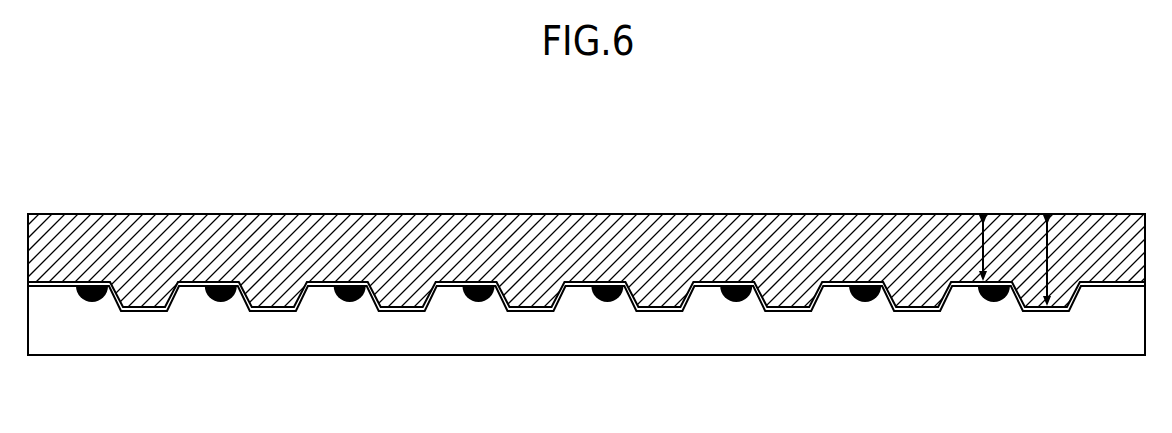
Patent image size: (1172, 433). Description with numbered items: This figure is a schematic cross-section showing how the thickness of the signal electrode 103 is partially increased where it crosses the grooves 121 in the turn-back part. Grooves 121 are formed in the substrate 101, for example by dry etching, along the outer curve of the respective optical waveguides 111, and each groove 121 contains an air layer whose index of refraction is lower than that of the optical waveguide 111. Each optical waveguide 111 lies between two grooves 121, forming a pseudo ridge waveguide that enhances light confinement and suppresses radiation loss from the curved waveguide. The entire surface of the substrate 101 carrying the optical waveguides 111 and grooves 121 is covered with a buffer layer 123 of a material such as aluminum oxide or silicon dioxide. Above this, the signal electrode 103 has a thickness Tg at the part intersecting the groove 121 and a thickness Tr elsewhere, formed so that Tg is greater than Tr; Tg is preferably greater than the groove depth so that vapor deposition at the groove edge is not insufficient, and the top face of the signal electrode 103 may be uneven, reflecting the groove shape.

The substrate 101 is at (588, 345).
The signal electrode 103 is at (793, 253).
The optical waveguide 111 is at (348, 302).
The groove 121 is at (246, 294).
The buffer layer 123 is at (430, 295).
The thickness of the other part of the signal electrode Tr is at (994, 238).
The thickness of the signal electrode at the intersecting part across the groove Tg is at (1057, 240).